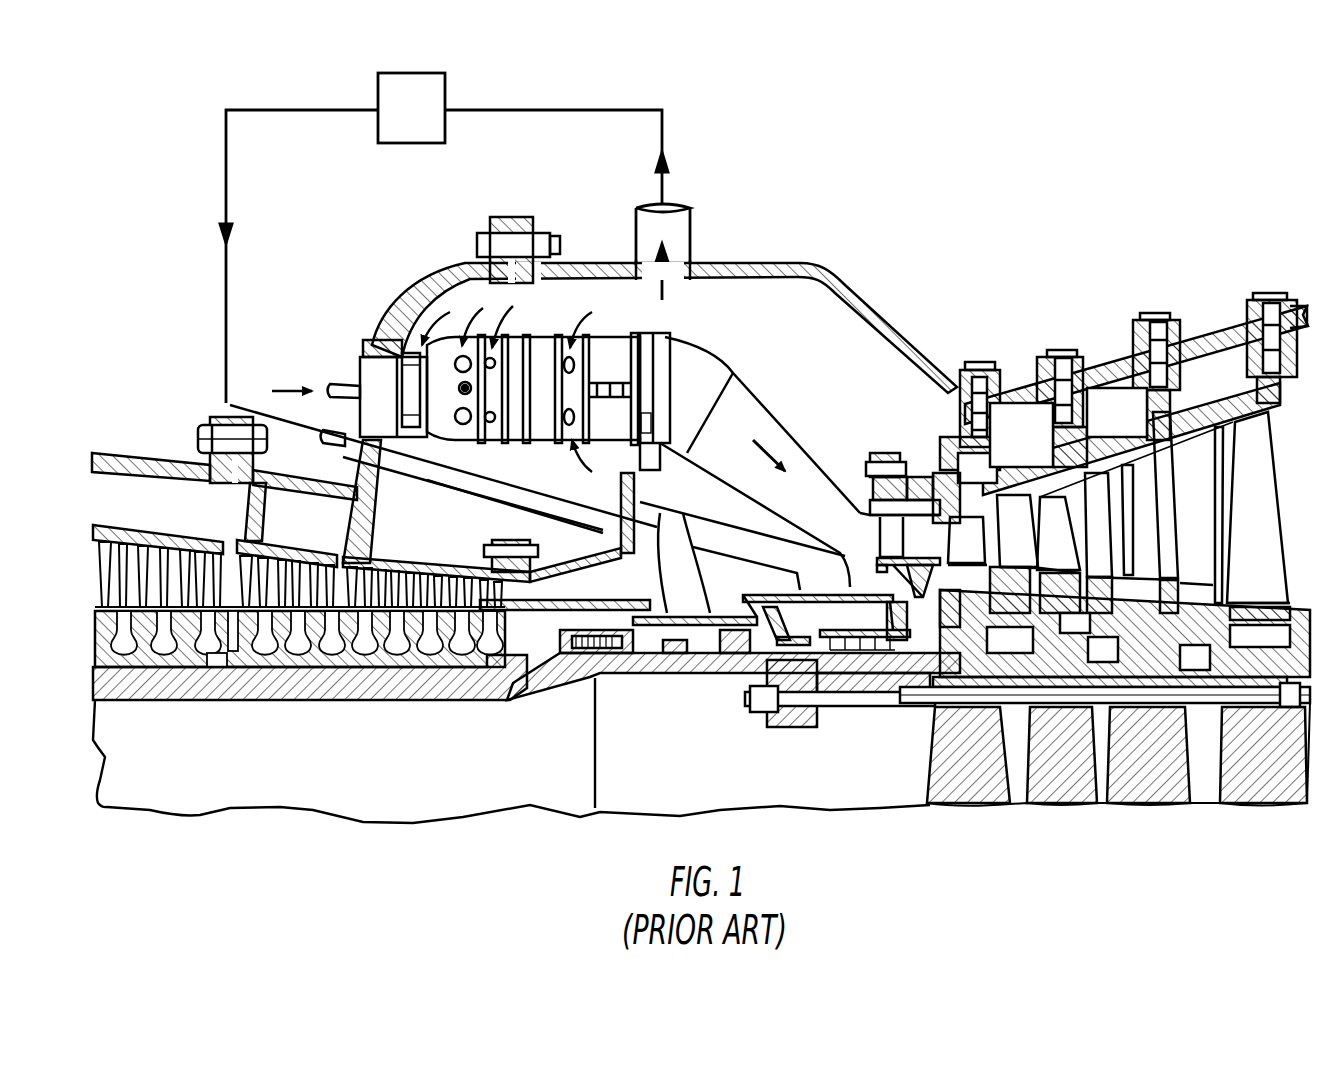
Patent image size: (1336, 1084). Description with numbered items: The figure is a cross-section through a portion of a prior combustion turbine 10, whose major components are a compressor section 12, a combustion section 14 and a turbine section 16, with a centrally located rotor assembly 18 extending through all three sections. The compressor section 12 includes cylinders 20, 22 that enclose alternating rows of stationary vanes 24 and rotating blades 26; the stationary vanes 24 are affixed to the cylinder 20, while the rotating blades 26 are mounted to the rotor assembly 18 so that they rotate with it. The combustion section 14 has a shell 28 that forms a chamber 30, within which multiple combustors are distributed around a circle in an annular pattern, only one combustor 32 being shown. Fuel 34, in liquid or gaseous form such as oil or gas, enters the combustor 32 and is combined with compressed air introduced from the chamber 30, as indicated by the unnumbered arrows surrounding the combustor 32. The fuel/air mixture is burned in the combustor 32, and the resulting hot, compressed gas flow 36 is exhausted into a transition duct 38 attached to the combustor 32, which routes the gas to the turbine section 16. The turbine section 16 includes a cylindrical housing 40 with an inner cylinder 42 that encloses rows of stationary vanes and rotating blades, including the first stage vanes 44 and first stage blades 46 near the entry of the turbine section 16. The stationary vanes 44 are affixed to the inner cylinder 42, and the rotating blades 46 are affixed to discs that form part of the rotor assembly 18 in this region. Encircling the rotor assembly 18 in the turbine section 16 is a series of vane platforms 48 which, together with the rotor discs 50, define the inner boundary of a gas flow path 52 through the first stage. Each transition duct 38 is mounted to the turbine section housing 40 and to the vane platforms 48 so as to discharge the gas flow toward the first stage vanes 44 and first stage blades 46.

The combustion turbine 10 is at (934, 170).
The compressor section 12 is at (374, 508).
The combustion section 14 is at (605, 395).
The turbine section 16 is at (1066, 512).
The rotor assembly 18 is at (712, 680).
The cylinder 20 is at (105, 528).
The cylinder 22 is at (152, 448).
The stationary vanes 24 is at (205, 540).
The rotating blades 26 is at (282, 565).
The shell 28 is at (864, 302).
The chamber 30 is at (882, 385).
The combustor 32 is at (540, 340).
The fuel 34 is at (308, 375).
The hot compressed gas flow 36 is at (770, 455).
The transition duct 38 is at (773, 418).
The cylindrical housing 40 is at (1112, 360).
The inner cylinder 42 is at (1128, 436).
The vanes 44 is at (882, 532).
The blades 46 is at (977, 537).
The vane platforms 48 is at (920, 555).
The rotor discs 50 is at (938, 590).
The gas flow path 52 is at (932, 530).